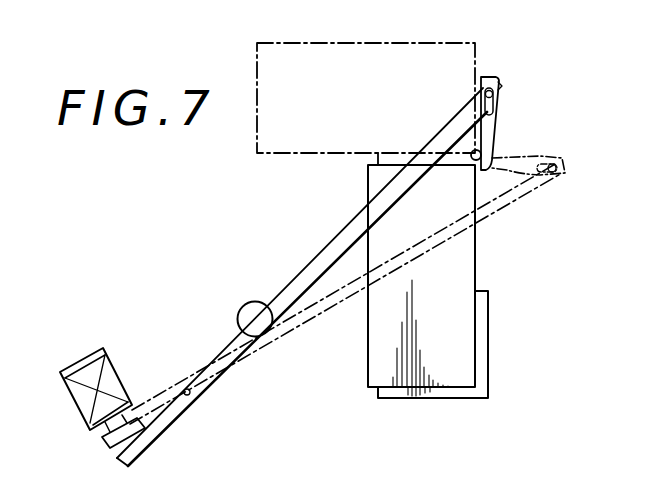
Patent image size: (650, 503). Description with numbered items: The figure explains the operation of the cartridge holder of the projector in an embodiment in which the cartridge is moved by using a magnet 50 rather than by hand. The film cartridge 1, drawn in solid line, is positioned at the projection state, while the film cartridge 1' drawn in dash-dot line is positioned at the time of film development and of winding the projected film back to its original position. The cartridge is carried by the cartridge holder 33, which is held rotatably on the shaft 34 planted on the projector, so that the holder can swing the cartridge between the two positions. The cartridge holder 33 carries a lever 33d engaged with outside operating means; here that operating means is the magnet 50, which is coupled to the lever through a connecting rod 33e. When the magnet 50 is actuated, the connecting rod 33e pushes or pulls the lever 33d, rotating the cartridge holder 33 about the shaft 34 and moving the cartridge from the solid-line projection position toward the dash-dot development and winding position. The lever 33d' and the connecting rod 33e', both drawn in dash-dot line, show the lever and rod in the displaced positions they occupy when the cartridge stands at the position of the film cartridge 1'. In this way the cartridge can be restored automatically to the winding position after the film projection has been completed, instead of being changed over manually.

The film cartridge 1 is at (439, 274).
The film cartridge 1' is at (366, 79).
The cartridge holder 33 is at (460, 397).
The lever 33d is at (510, 123).
The lever 33d' is at (539, 144).
The connecting rod 33e is at (302, 277).
The connecting rod 33e' is at (349, 293).
The shaft 34 is at (472, 161).
The magnet 50 is at (87, 372).